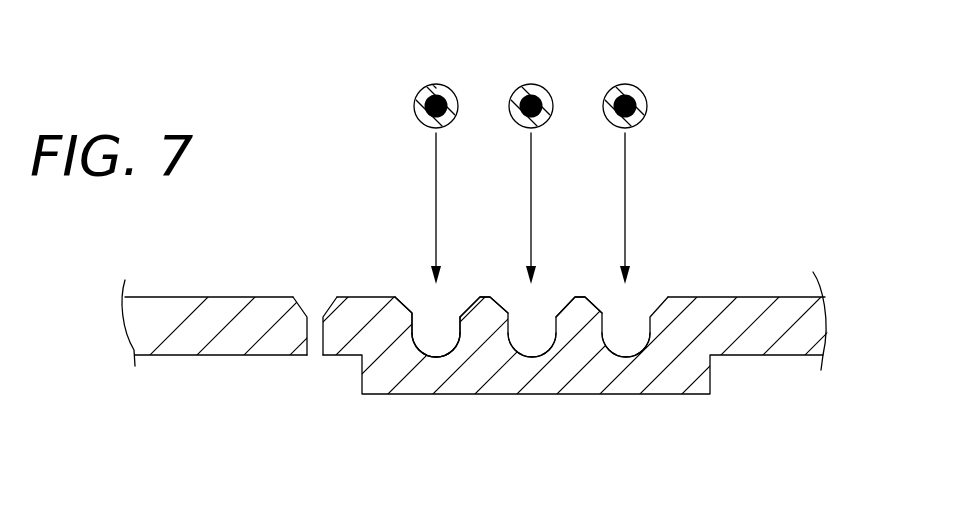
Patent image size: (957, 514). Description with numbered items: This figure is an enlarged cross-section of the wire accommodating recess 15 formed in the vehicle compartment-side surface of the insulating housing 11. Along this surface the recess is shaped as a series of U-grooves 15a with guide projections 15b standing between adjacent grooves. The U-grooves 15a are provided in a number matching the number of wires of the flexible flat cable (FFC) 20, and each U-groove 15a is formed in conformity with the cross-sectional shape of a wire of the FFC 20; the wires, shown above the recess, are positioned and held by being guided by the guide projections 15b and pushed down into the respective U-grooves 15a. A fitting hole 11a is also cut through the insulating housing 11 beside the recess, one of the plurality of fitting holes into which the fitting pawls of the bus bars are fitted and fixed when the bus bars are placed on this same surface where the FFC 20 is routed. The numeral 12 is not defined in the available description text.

The insulating housing 11 is at (746, 292).
The fitting hole 11a is at (315, 297).
The mounting portion / cable holding portion 12 is at (666, 230).
The wire accommodating recess 15 is at (418, 290).
The U-groove 15a is at (533, 348).
The guide projection 15b is at (485, 297).
The flexible flat cable (FFC) 20 is at (553, 82).